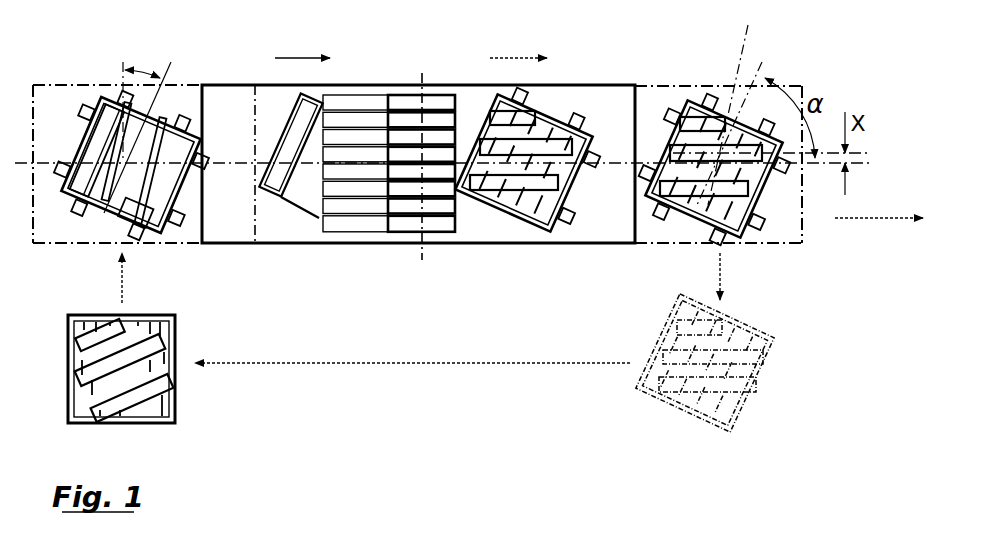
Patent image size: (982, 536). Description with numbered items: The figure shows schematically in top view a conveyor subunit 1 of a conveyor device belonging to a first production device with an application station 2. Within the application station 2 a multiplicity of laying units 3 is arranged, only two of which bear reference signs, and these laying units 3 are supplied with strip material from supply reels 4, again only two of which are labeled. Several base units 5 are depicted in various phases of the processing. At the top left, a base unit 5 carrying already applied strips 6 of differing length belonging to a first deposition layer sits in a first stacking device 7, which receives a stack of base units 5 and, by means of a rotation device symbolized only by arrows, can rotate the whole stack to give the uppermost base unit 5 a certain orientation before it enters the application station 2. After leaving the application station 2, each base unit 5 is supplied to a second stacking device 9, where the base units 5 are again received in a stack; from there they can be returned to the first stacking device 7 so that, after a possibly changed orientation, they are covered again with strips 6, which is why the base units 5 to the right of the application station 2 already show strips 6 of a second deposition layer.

The conveyor subunit 1 is at (610, 100).
The application station 2 is at (448, 82).
The laying unit 3 is at (407, 213).
The supply reel 4 is at (360, 210).
The base unit 5 is at (92, 193).
The strip 6 is at (97, 90).
The first stacking device 7 is at (43, 230).
The second stacking device 9 is at (658, 237).